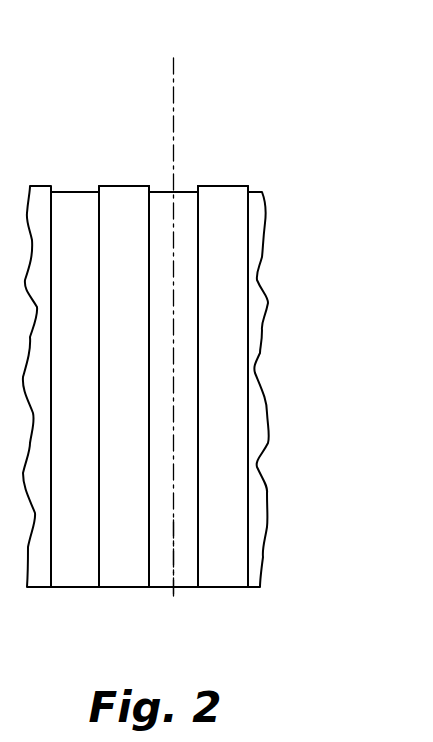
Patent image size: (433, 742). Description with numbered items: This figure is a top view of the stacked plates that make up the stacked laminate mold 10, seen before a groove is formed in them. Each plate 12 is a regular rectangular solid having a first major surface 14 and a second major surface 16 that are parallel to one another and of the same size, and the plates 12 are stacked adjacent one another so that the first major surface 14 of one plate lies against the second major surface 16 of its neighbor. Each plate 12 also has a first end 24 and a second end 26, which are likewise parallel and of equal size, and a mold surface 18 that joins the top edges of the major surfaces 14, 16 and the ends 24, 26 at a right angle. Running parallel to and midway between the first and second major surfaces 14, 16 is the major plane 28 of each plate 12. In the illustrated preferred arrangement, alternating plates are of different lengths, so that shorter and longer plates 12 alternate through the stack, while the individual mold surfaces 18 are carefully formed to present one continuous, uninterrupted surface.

The stacked laminate mold 10 is at (287, 108).
The plate 12 is at (115, 589).
The first major surface 14 is at (148, 200).
The second major surface 16 is at (199, 200).
The mold surface 18 is at (183, 210).
The first end 24 is at (183, 590).
The second end 26 is at (162, 187).
The major plane 28 is at (172, 78).